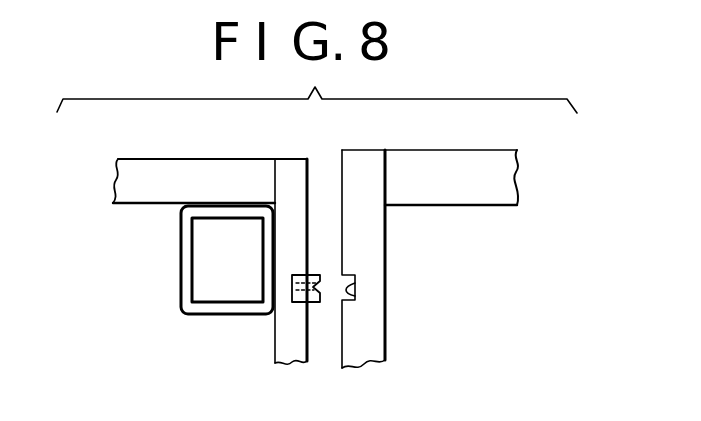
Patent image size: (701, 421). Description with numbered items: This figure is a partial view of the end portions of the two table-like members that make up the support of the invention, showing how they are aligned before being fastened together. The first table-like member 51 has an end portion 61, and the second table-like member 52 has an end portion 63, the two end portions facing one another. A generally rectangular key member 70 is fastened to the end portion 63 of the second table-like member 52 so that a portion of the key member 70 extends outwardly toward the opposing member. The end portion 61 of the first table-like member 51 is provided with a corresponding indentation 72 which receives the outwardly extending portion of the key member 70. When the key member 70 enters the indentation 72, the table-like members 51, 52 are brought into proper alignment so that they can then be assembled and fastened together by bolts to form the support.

The first table-like member 51 is at (475, 150).
The second table-like member 52 is at (178, 159).
The end portion 61 is at (386, 250).
The end portion 63 is at (308, 162).
The key member 70 is at (320, 302).
The indentation 72 is at (355, 293).